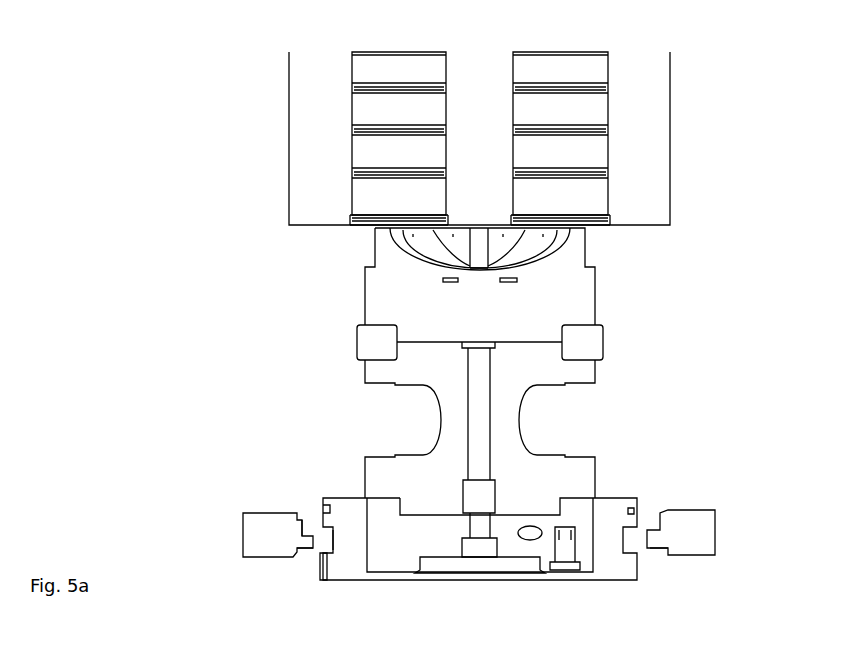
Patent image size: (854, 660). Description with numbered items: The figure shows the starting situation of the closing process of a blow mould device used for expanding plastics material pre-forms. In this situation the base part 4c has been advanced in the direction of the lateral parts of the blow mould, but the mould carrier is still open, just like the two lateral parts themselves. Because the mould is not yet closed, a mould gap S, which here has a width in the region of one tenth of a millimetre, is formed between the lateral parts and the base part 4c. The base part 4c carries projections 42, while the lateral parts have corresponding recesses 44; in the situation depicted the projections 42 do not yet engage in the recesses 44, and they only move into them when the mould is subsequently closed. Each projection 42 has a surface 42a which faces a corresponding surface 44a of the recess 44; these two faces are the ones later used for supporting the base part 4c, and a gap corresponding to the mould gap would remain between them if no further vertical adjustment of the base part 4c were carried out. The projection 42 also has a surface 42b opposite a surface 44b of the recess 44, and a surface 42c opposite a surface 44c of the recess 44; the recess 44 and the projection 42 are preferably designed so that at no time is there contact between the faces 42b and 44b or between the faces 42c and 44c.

The mould gap S is at (538, 228).
The base part 4c is at (584, 300).
The projection 42 is at (653, 550).
The surface of the projection 42a is at (303, 512).
The surface of the projection 42b is at (316, 533).
The surface of the projection 42c is at (300, 555).
The recess 44 is at (627, 542).
The surface of the recess 44a is at (333, 510).
The surface of the recess 44b is at (318, 545).
The surface of the recess 44c is at (328, 558).